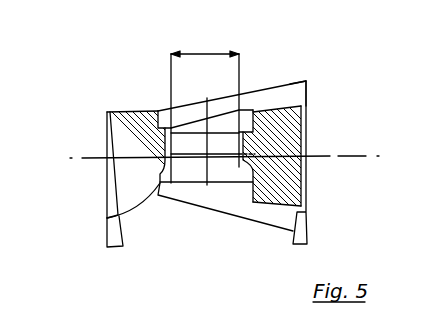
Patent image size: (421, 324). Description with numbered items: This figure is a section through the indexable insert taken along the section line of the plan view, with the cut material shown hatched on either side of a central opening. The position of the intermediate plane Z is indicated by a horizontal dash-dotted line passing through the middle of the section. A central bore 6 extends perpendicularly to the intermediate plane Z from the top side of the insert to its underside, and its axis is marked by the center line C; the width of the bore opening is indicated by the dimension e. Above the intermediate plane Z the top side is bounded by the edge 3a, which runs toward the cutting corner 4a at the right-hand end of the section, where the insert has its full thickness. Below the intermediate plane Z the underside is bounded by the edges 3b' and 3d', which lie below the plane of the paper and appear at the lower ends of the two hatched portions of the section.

The edge 3a is at (263, 83).
The cutting corner 4a is at (304, 82).
The edge 3b' is at (231, 152).
The edge 3d' is at (219, 155).
The central bore 6 is at (198, 170).
The center line of roller C is at (219, 193).
The intermediate plane Z is at (340, 156).
The pocket width dimension e is at (205, 45).